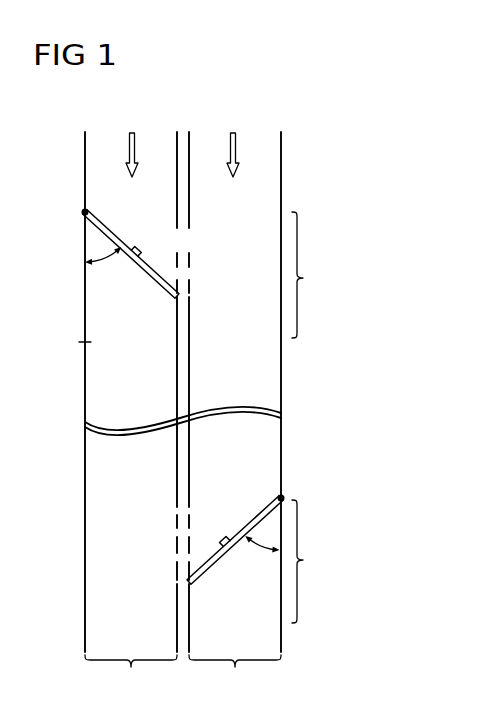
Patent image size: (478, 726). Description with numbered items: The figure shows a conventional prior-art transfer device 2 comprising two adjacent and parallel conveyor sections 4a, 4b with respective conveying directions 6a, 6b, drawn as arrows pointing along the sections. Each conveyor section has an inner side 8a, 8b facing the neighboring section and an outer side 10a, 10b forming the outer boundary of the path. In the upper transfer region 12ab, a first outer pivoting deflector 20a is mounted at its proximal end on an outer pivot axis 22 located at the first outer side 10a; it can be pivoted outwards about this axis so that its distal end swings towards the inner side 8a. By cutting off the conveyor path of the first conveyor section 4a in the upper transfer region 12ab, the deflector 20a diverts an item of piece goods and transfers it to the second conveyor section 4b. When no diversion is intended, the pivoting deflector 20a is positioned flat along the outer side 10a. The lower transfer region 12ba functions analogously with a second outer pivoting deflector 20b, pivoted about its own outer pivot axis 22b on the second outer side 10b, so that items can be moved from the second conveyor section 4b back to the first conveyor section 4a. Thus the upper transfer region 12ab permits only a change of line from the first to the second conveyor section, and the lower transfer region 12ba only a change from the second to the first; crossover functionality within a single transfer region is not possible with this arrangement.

The transfer device 2 is at (218, 359).
The first conveyor section 4a is at (131, 680).
The second conveyor section 4b is at (235, 680).
The first conveying direction 6a is at (140, 153).
The second conveying direction 6b is at (241, 153).
The first inner side 8a is at (176, 402).
The second inner side 8b is at (190, 402).
The first outer side 10a is at (87, 361).
The second outer side 10b is at (279, 362).
The upper transfer region 12ab is at (326, 275).
The lower transfer region 12ba is at (326, 561).
The first outer pivoting deflector 20a is at (131, 251).
The second outer pivoting deflector 20b is at (235, 538).
The outer pivot axis 22 is at (85, 212).
The outer pivot axis 22b is at (281, 498).